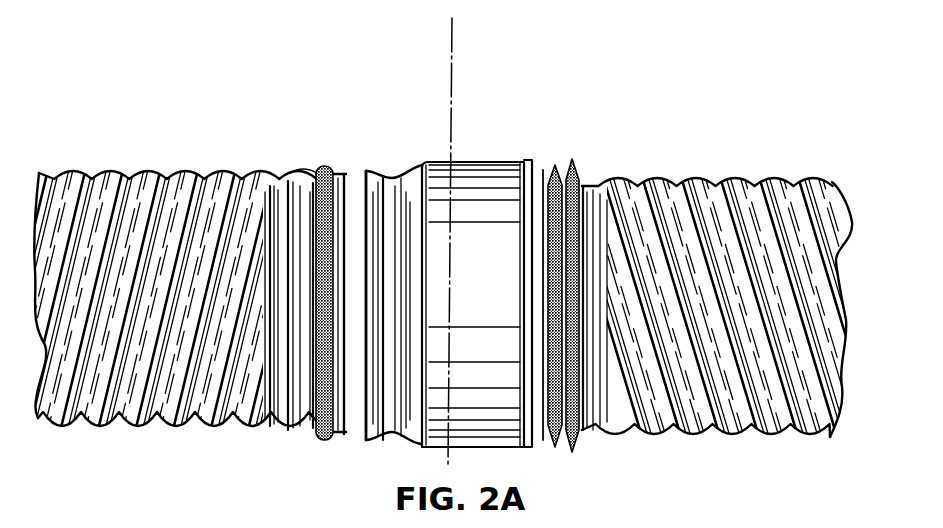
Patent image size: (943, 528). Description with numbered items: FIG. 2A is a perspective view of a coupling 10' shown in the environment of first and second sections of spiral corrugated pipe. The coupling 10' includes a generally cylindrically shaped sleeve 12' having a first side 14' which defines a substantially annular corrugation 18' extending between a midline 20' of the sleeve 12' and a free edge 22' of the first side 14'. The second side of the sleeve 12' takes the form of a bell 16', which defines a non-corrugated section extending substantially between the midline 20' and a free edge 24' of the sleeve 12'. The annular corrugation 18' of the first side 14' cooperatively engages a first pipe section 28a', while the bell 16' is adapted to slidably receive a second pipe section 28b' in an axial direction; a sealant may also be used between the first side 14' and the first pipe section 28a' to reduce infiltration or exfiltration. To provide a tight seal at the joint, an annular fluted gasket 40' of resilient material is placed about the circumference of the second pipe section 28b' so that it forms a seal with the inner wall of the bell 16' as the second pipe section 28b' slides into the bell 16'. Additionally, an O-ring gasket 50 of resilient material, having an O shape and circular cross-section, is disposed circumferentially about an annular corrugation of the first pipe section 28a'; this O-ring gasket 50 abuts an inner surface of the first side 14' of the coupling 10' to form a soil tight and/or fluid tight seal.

The coupling 10' is at (465, 237).
The sleeve 12' is at (473, 282).
The first side 14' is at (368, 260).
The bell 16' is at (568, 265).
The annular corrugation 18' is at (386, 278).
The midline 20' is at (475, 241).
The free edge 22' is at (336, 282).
The free edge 24' is at (549, 284).
The first pipe section 28a' is at (173, 300).
The second pipe section 28b' is at (731, 324).
The fluted gasket 40' is at (583, 289).
The O-ring gasket 50 is at (318, 168).